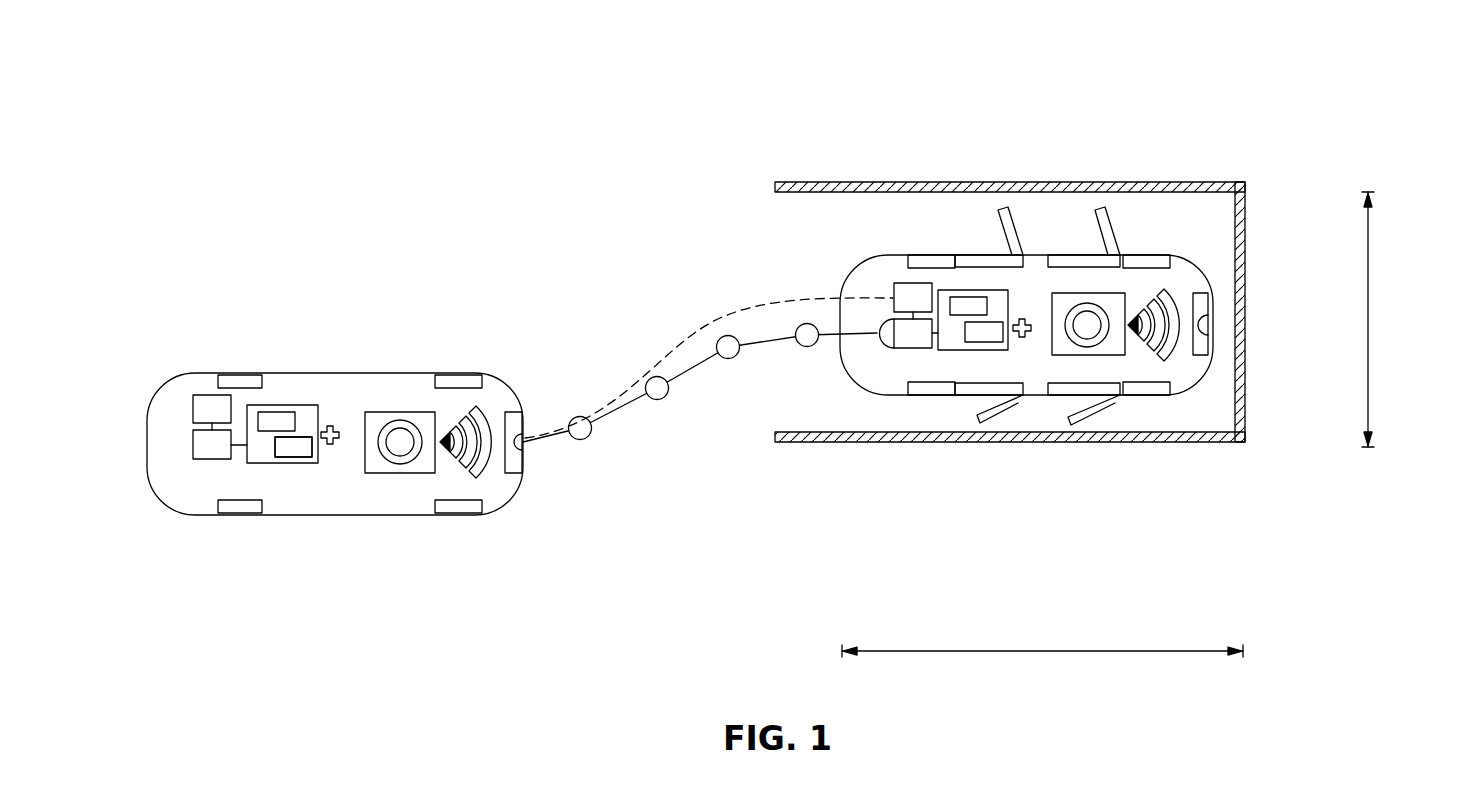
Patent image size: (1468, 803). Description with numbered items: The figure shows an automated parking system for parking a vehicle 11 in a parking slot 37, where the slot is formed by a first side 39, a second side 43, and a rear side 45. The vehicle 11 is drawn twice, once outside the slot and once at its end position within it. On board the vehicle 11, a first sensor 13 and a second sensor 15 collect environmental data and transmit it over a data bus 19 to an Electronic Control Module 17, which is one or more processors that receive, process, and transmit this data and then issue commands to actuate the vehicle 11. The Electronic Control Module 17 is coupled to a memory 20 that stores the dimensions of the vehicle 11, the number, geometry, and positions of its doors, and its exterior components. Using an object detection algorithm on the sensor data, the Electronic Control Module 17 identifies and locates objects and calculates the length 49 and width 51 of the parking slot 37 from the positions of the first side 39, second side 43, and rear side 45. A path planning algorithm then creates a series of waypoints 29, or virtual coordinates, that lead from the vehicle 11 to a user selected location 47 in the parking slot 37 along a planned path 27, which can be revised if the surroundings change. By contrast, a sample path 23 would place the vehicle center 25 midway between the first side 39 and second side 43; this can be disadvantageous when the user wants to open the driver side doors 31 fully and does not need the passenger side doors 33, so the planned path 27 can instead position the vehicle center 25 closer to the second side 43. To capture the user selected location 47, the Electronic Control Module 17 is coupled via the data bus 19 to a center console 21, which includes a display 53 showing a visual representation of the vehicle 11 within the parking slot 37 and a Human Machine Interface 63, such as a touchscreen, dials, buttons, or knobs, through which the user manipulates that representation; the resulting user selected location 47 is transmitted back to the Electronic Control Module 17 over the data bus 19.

The vehicle 11 is at (148, 445).
The first sensor 13 is at (392, 412).
The second sensor 15 is at (517, 477).
The Electronic Control Module (ECM) 17 is at (203, 459).
The data bus 19 is at (240, 447).
The memory 20 is at (208, 395).
The center console 21 is at (280, 458).
The sample path 23 is at (712, 323).
The vehicle center 25 is at (328, 445).
The planned path 27 is at (767, 342).
The waypoints 29 is at (583, 440).
The driver side doors 31 is at (1015, 220).
The passenger side doors 33 is at (985, 425).
The parking slot 37 is at (1387, 72).
The first side 39 is at (1178, 185).
The second side 43 is at (885, 442).
The rear side 45 is at (1243, 275).
The user selected location 47 is at (1208, 320).
The length 49 is at (1027, 650).
The width 51 is at (1368, 322).
The display 53 is at (292, 458).
The Human Machine Interface (HMI) 63 is at (267, 410).